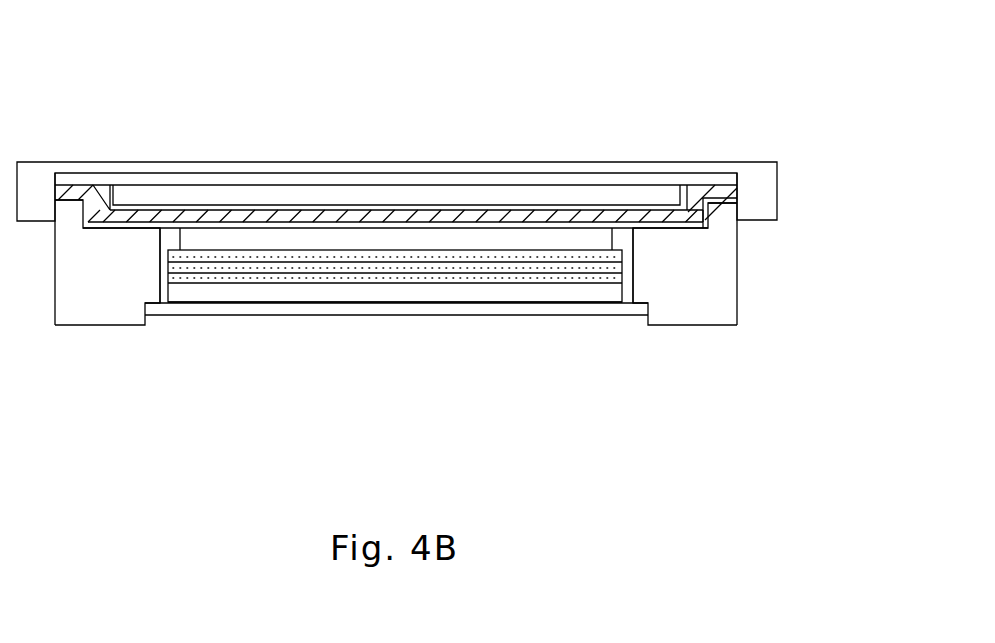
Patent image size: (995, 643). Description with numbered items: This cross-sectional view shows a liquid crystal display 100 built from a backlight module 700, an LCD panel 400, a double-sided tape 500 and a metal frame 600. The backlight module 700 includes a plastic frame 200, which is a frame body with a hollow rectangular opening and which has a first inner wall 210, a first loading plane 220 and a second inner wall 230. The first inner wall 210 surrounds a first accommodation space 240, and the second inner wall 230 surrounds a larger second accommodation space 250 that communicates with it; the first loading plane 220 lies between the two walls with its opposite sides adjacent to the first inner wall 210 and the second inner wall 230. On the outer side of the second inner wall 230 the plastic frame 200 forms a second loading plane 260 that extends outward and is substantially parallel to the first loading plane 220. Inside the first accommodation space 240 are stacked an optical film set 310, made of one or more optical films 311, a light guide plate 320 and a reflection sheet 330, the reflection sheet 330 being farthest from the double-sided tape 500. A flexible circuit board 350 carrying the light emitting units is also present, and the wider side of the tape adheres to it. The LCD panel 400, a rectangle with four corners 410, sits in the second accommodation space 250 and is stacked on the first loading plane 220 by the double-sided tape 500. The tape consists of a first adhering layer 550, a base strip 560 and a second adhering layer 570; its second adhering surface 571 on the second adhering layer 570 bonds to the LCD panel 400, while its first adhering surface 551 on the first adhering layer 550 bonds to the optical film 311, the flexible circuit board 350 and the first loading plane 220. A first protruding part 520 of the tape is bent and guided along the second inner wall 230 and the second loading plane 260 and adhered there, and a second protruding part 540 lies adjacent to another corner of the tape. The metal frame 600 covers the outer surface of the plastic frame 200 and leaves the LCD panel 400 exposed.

The liquid crystal display 100 is at (798, 50).
The plastic frame 200 is at (108, 335).
The first inner wall 210 is at (623, 305).
The first loading plane 220 is at (663, 228).
The second inner wall 230 is at (712, 217).
The first accommodation space 240 is at (163, 295).
The second accommodation space 250 is at (109, 240).
The second loading plane 260 is at (722, 202).
The optical film set 310 is at (585, 370).
The optical film 311 is at (537, 278).
The light guide plate 320 is at (358, 295).
The reflection sheet 330 is at (287, 310).
The flexible circuit board 350 is at (208, 238).
The LCD panel 400 is at (607, 183).
The corner 410 is at (133, 192).
The double-sided tape 500 is at (493, 112).
The first protruding part 520 is at (73, 193).
The second protruding part 540 is at (697, 190).
The first adhering layer 550 is at (315, 222).
The first adhering surface 551 is at (223, 213).
The base strip 560 is at (377, 218).
The second adhering layer 570 is at (445, 208).
The second adhering surface 571 is at (542, 205).
The metal frame 600 is at (779, 190).
The backlight module 700 is at (535, 417).